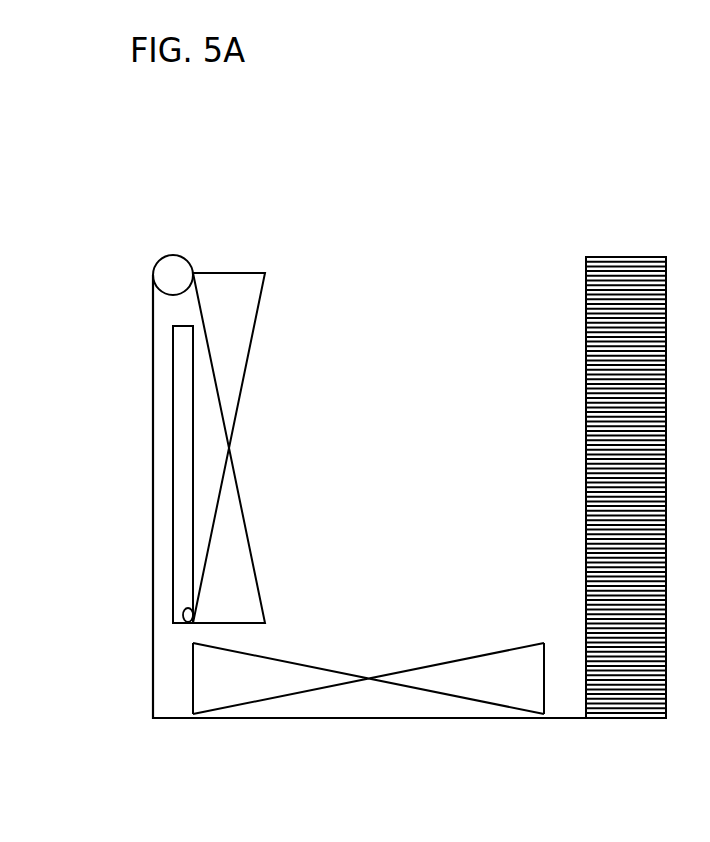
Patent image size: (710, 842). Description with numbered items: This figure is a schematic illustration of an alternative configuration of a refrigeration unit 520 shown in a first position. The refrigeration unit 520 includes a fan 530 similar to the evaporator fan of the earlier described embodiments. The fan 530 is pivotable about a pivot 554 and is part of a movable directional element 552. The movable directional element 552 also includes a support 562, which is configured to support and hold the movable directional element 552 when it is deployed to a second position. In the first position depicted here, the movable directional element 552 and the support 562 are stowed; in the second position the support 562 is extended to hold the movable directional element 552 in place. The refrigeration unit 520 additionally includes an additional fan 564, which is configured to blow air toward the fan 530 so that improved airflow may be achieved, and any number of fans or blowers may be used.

The refrigeration unit 520 is at (409, 425).
The movable directional element 552 is at (340, 418).
The pivot 554 is at (169, 270).
The fan 530 is at (243, 582).
The support 562 is at (180, 498).
The additional fan 564 is at (479, 683).